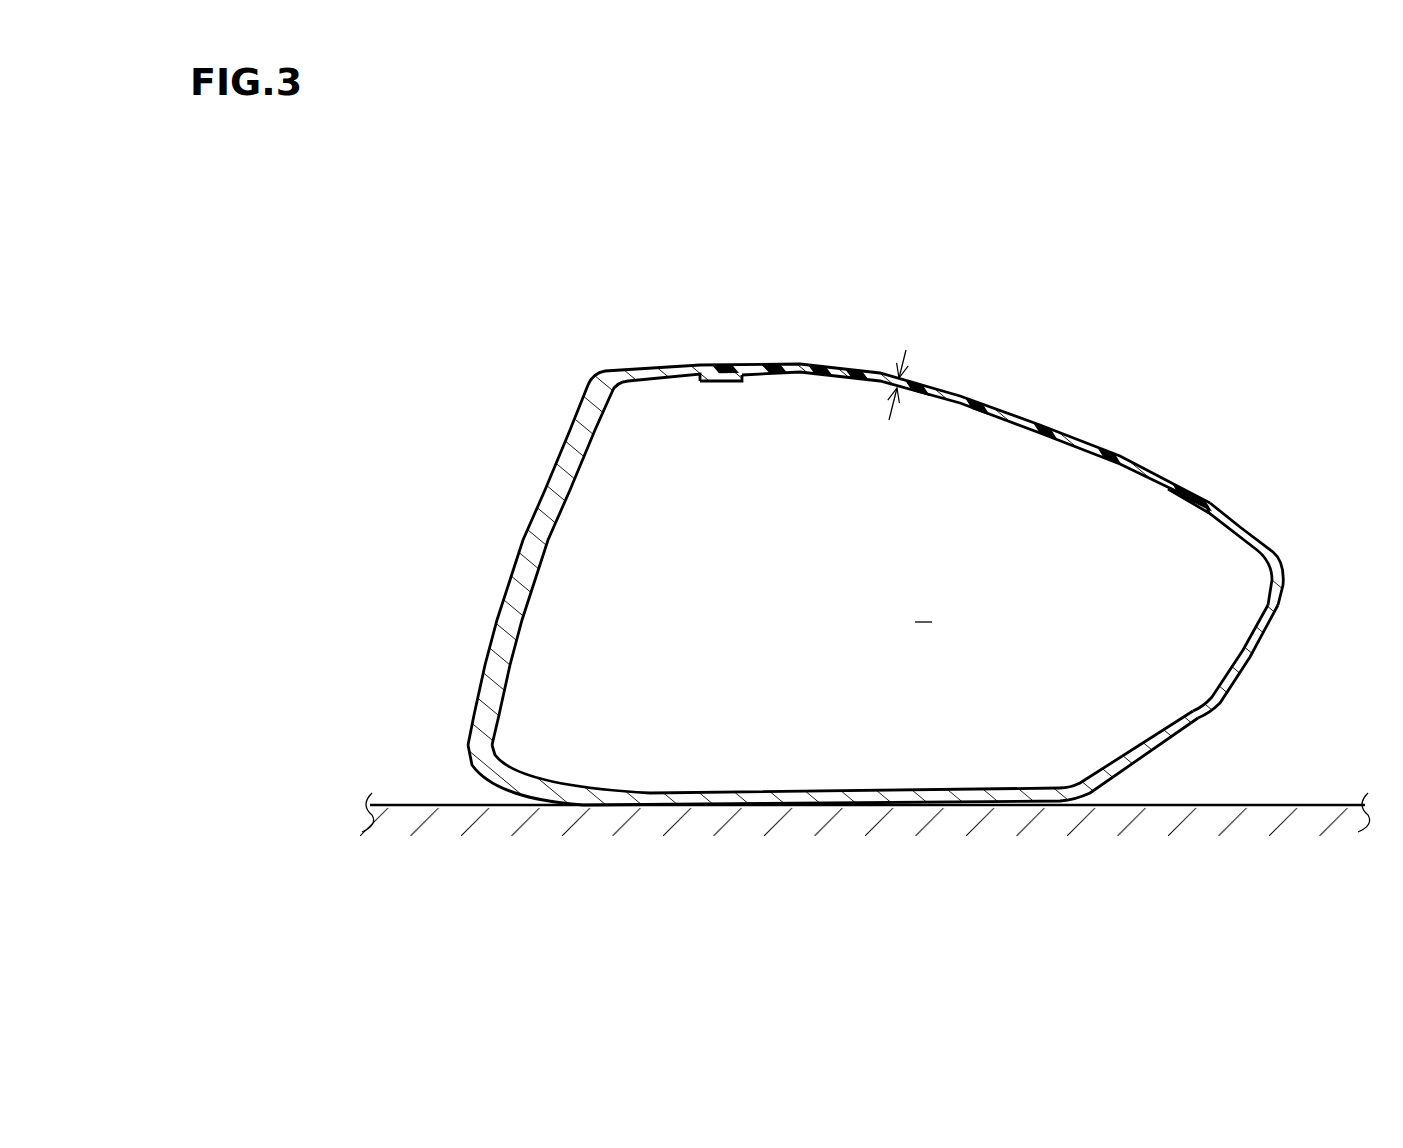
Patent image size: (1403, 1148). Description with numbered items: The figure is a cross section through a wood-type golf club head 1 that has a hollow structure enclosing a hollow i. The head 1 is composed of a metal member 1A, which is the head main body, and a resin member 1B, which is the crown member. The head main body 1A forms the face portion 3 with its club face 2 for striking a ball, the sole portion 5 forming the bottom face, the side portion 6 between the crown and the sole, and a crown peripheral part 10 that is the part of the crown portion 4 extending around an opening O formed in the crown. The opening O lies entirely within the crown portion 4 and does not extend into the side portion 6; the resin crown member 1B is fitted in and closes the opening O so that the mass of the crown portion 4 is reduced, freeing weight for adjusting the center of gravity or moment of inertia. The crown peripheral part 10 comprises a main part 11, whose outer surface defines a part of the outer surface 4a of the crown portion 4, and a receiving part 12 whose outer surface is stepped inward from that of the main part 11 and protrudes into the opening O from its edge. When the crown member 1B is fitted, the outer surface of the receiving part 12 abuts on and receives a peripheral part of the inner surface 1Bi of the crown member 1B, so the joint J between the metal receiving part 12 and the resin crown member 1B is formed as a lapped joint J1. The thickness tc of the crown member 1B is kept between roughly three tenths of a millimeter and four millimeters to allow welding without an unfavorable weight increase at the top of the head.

The golf club head 1 is at (1257, 317).
The metal member (head main body) 1A is at (1236, 510).
The resin member (crown member) 1B is at (908, 398).
The inner surface of the crown member 1Bi is at (950, 401).
The club face 2 is at (542, 500).
The face portion 3 is at (512, 578).
The crown portion 4 is at (888, 341).
The outer surface of the crown portion 4a is at (991, 407).
The sole portion 5 is at (815, 809).
The side portion 6 is at (1254, 657).
The crown peripheral part 10 is at (693, 468).
The main part 11 is at (678, 373).
The receiving part 12 is at (727, 376).
The opening O is at (746, 376).
The joint J is at (931, 373).
The lapped joint J1 is at (718, 359).
The thickness of the crown member tc is at (901, 377).
The hollow i is at (923, 608).